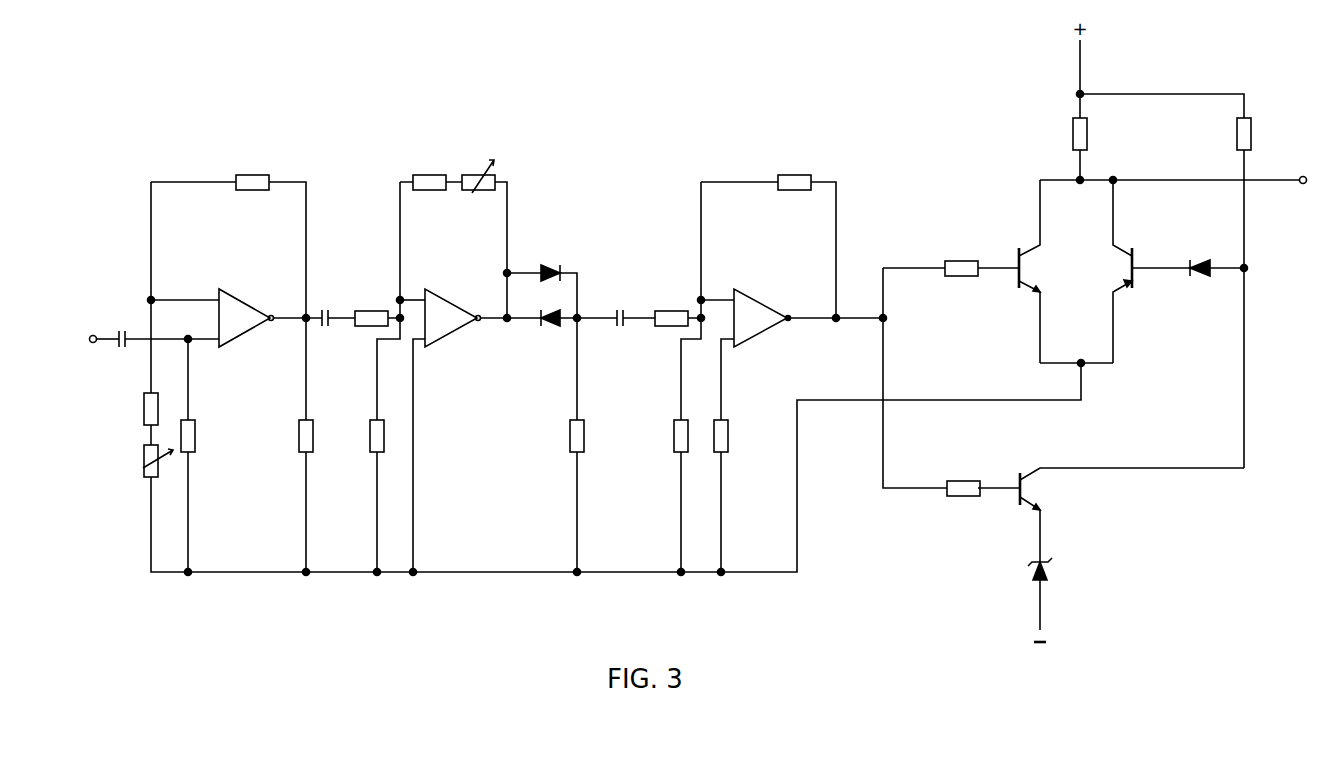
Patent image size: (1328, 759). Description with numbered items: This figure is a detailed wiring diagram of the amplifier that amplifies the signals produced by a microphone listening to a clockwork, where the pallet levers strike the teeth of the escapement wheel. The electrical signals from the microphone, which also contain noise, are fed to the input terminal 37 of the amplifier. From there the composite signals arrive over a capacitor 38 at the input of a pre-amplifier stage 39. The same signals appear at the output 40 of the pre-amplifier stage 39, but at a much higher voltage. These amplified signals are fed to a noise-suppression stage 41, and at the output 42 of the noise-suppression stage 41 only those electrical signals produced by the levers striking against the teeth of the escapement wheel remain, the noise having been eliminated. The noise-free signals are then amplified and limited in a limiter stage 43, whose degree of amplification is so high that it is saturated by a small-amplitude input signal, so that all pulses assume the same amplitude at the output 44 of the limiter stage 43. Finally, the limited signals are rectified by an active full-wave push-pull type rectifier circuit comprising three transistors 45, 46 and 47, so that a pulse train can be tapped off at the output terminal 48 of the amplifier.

The input terminal 37 is at (91, 336).
The capacitor 38 is at (121, 332).
The pre-amplifier stage 39 is at (242, 293).
The output of the pre-amplifier stage 40 is at (308, 316).
The noise-suppression stage 41 is at (441, 306).
The output of the noise-suppression stage 42 is at (578, 315).
The limiter stage 43 is at (748, 310).
The output of the limiter stage 44 is at (836, 321).
The transistor 45 is at (1025, 266).
The transistor 46 is at (1128, 268).
The transistor 47 is at (1030, 486).
The output terminal 48 is at (1303, 176).